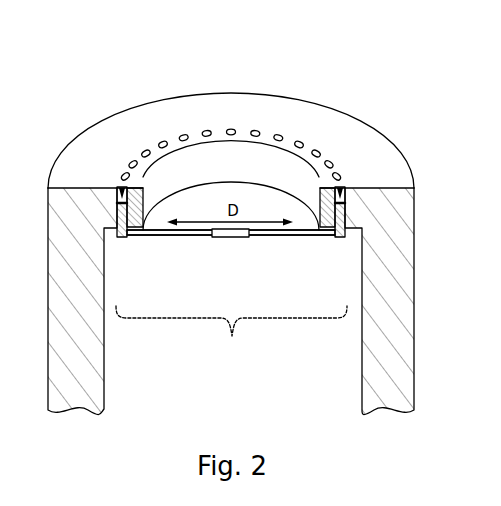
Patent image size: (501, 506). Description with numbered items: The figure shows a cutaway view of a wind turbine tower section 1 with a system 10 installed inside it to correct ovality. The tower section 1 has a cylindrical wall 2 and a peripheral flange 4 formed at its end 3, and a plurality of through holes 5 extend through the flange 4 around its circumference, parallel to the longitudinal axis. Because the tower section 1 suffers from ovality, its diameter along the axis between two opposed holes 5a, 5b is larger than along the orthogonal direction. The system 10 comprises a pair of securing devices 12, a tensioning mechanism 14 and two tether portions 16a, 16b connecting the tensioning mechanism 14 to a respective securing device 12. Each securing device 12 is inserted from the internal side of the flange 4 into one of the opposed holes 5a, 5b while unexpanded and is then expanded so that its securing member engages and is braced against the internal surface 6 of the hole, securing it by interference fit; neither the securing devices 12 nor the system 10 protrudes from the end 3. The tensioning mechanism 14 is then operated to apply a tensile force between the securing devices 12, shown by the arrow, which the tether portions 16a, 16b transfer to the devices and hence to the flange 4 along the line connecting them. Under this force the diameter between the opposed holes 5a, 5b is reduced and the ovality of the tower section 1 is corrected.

The tower section 1 is at (328, 89).
The cylindrical wall 2 is at (63, 340).
The end 3 is at (395, 174).
The flange 4 is at (140, 189).
The through holes 5 is at (184, 134).
The opposed hole 5a is at (122, 187).
The opposed hole 5b is at (340, 187).
The internal surface 6 is at (345, 192).
The system 10 is at (231, 296).
The securing device 12 is at (120, 240).
The tensioning mechanism 14 is at (228, 240).
The tether portion 16a is at (175, 240).
The tether portion 16b is at (275, 240).